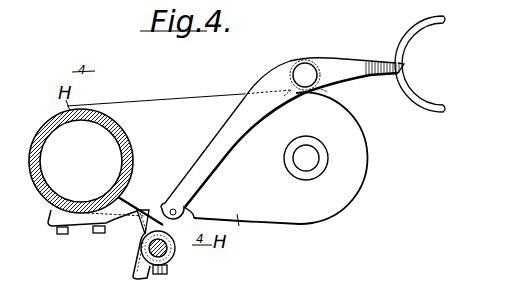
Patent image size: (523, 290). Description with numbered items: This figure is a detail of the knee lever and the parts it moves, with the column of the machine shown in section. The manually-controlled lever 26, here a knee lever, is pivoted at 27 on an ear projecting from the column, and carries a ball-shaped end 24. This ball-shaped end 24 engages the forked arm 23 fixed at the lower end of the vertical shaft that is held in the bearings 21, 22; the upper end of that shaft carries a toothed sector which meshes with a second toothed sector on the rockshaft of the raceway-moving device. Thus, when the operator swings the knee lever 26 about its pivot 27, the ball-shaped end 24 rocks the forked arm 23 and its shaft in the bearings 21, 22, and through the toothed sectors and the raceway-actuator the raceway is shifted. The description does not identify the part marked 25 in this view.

The bearing 21 is at (81, 161).
The bearing 22 is at (142, 250).
The forked arm 23 is at (160, 225).
The ball-shaped end 24 is at (169, 203).
The cam disk 25 is at (280, 158).
The manually-controlled lever 26 is at (257, 93).
The pivot 27 is at (305, 66).